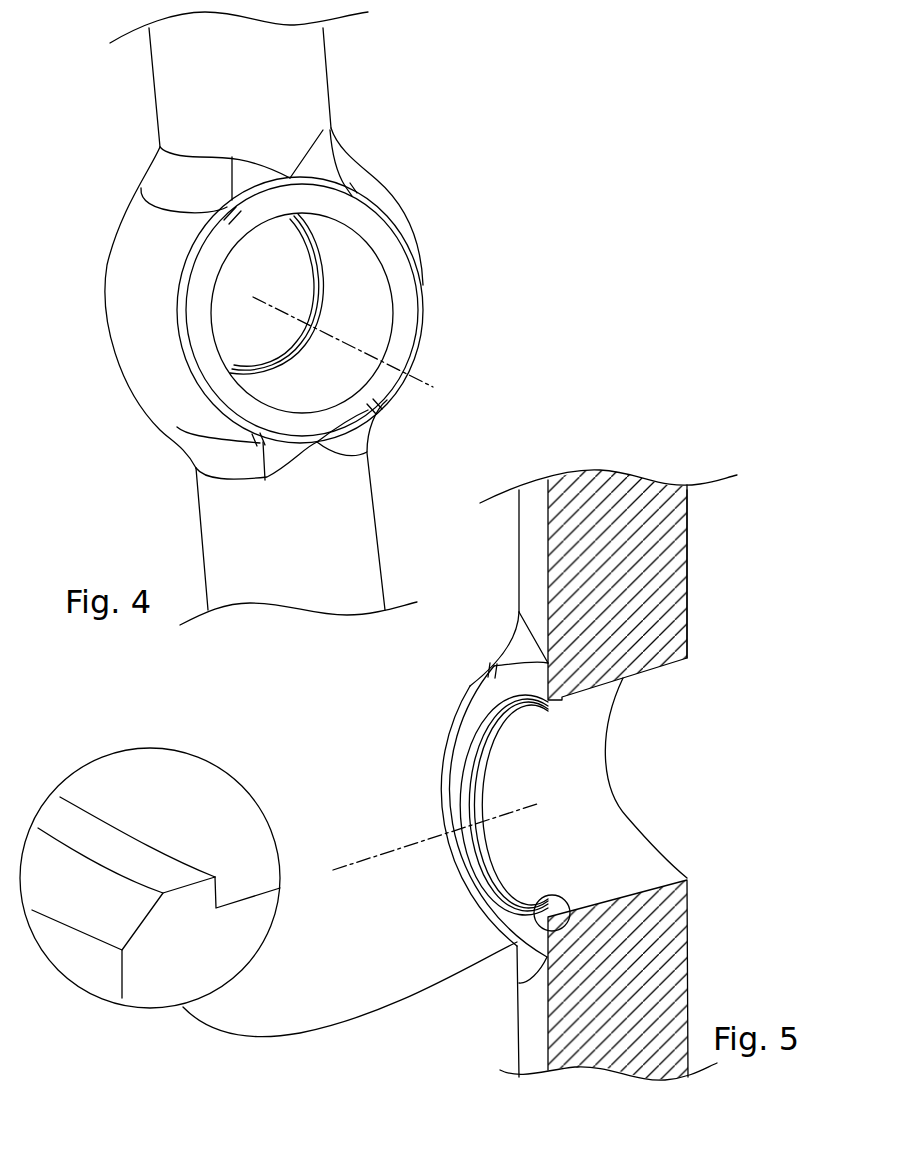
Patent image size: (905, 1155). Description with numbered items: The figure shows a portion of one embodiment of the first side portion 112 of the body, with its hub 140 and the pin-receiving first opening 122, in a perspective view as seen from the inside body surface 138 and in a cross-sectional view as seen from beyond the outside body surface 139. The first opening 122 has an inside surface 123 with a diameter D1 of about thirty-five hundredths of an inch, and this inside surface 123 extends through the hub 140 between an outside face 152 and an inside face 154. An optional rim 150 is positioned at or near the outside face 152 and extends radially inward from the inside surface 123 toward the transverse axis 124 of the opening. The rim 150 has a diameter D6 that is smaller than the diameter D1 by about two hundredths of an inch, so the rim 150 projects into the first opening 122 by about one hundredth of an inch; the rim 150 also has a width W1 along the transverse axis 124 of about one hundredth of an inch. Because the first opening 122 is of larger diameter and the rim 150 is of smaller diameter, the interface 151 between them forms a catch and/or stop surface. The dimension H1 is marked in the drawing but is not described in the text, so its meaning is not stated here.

In FIG. 4, the first side portion 112 is at (330, 78).
In FIG. 5, the first side portion 112 is at (688, 513).
In FIG. 4, the first opening 122 is at (287, 287).
In FIG. 5, the first opening 122 is at (660, 747).
In FIG. 4, the inside surface 123 is at (380, 300).
In FIG. 5, the inside surface 123 is at (612, 823).
In FIG. 4, the transverse axis 124 is at (433, 387).
In FIG. 5, the transverse axis 124 is at (333, 870).
In FIG. 4, the inside body surface 138 is at (308, 572).
In FIG. 5, the outside body surface 139 is at (530, 1013).
In FIG. 4, the hub 140 is at (130, 214).
In FIG. 5, the hub 140 is at (477, 673).
In FIG. 4, the rim 150 is at (317, 278).
In FIG. 5, the rim 150 is at (500, 858).
In FIG. 5, the interface 151 is at (217, 880).
In FIG. 4, the outside face 152 is at (87, 266).
In FIG. 5, the outside face 152 is at (477, 715).
In FIG. 4, the inside face 154 is at (202, 323).
In FIG. 5, the inside face 154 is at (699, 640).
In FIG. 4, the diameter of inside surface D1 is at (378, 243).
In FIG. 5, the diameter of inside surface D1 is at (557, 703).
In FIG. 5, the diameter of rim D6 is at (540, 875).
In FIG. 4, the lip height H1 is at (300, 357).
In FIG. 5, the lip height H1 is at (697, 884).
In FIG. 4, the width of rim W1 is at (300, 350).
In FIG. 5, the width of rim W1 is at (530, 773).